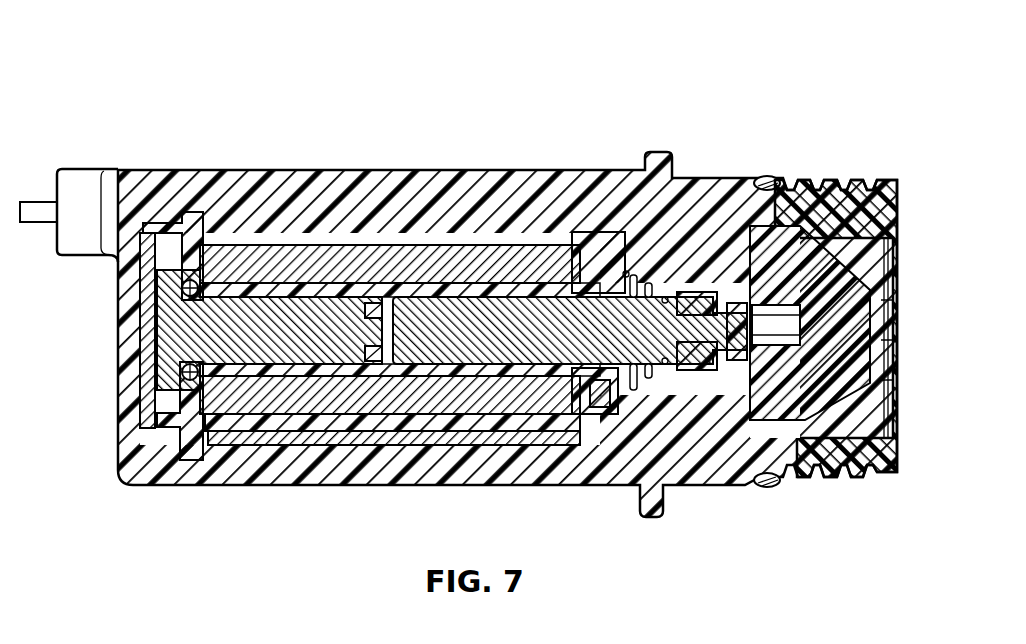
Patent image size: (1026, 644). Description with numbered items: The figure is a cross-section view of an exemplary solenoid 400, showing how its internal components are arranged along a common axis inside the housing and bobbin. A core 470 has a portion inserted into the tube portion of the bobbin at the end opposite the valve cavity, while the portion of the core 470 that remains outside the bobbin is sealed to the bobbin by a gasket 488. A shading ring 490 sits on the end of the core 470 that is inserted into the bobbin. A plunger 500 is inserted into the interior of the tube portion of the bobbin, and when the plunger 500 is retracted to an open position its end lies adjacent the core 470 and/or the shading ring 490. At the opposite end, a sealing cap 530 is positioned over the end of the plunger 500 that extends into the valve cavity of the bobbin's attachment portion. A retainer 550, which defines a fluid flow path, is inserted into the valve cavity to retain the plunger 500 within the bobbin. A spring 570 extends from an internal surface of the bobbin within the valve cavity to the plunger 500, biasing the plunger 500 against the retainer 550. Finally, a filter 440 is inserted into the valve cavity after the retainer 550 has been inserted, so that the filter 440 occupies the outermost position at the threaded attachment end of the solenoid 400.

The solenoid 400 is at (112, 86).
The filter 440 is at (866, 236).
The core 470 is at (278, 318).
The gasket 488 is at (189, 282).
The shading ring 490 is at (375, 310).
The plunger 500 is at (490, 318).
The sealing cap 530 is at (692, 300).
The retainer 550 is at (800, 368).
The spring 570 is at (650, 296).